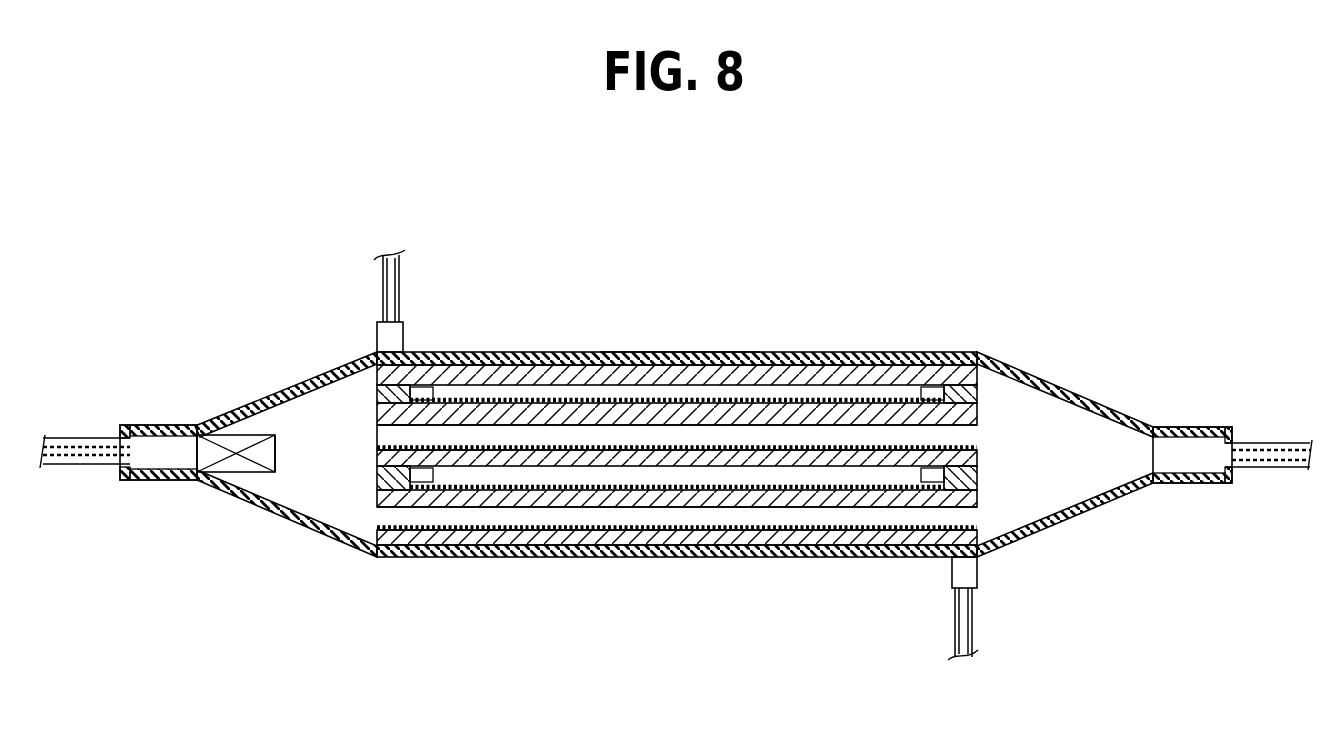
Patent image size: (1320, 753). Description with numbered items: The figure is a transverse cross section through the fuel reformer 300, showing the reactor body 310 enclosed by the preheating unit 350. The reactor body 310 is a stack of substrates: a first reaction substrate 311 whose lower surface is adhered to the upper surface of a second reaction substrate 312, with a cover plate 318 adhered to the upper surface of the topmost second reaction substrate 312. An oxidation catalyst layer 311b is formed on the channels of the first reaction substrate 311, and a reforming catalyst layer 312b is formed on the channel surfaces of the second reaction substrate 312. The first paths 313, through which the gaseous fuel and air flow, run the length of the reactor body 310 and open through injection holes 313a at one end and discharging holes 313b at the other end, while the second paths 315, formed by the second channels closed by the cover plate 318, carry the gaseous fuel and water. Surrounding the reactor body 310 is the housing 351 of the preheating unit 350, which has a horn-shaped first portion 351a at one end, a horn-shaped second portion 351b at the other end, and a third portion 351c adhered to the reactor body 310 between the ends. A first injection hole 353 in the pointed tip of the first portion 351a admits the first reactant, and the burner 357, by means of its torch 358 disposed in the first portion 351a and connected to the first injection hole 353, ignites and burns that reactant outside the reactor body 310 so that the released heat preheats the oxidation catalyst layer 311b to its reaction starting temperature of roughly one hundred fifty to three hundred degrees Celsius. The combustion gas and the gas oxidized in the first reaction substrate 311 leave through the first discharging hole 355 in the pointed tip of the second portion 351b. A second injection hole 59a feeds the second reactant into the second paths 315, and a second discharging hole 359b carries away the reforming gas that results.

The fuel reformer 300 is at (690, 204).
The reactor body 310 is at (343, 468).
The first reaction substrate 311 is at (751, 398).
The oxidation catalyst layer 311b is at (808, 445).
The second reaction substrate 312 is at (741, 357).
The reforming catalyst layer 312b is at (627, 403).
The first paths 313 is at (883, 422).
The injection holes 313a is at (380, 515).
The discharging holes 313b is at (980, 517).
The second paths 315 is at (513, 385).
The cover plate 318 is at (823, 372).
The preheating unit 350 is at (148, 506).
The housing 351 is at (598, 568).
The first portion 351a is at (215, 490).
The second portion 351b is at (1085, 515).
The third portion 351c is at (675, 352).
The first injection hole 353 is at (143, 425).
The first discharging hole 355 is at (1190, 428).
The burner 357 is at (292, 434).
The torch 358 is at (237, 436).
The second injection hole 59a is at (403, 340).
The second discharging hole 359b is at (950, 575).